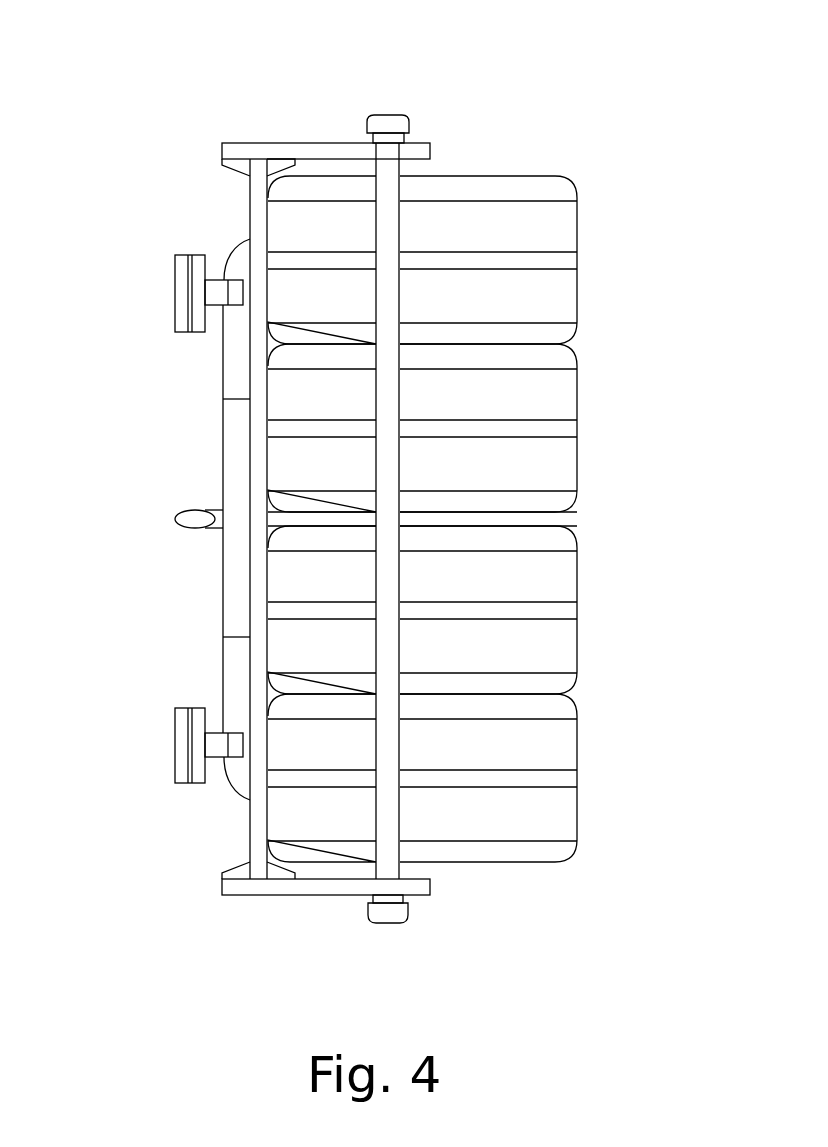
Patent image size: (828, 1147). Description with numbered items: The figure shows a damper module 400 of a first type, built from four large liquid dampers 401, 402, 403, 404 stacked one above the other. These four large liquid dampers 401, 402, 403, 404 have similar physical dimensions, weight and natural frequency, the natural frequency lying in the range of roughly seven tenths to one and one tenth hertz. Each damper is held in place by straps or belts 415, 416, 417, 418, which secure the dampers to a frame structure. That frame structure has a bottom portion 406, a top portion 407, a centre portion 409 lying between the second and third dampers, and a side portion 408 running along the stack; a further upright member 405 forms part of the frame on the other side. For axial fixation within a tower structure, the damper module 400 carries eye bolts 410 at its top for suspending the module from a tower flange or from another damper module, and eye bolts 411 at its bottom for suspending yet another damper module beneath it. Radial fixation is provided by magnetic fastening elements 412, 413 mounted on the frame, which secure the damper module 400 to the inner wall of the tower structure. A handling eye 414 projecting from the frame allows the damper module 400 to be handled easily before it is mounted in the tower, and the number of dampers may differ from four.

The damper module 400 is at (585, 106).
The large liquid damper 401 is at (550, 218).
The large liquid damper 402 is at (553, 397).
The large liquid damper 403 is at (565, 585).
The large liquid damper 404 is at (565, 733).
The support post 405 is at (257, 820).
The bottom portion 406 is at (305, 887).
The top portion 407 is at (313, 143).
The side portion 408 is at (395, 822).
The centre portion 409 is at (280, 517).
The eye bolts 410 is at (402, 118).
The eye bolts 411 is at (405, 917).
The magnetic fastening element 412 is at (175, 287).
The magnetic fastening element 413 is at (175, 745).
The handling eye 414 is at (175, 512).
The strap or belt 415 is at (550, 260).
The strap or belt 416 is at (550, 430).
The strap or belt 417 is at (550, 612).
The strap or belt 418 is at (550, 778).